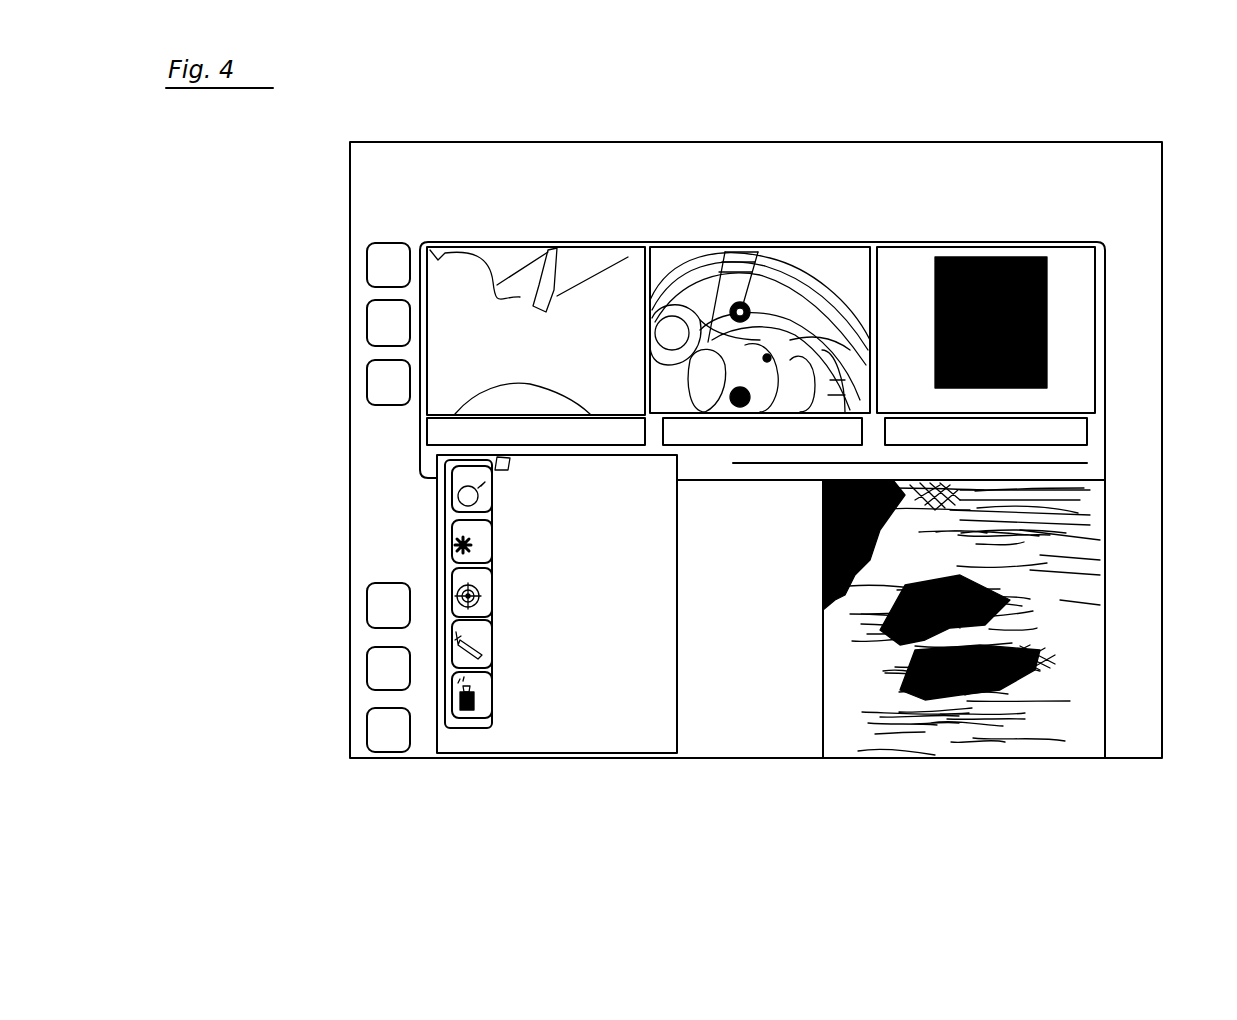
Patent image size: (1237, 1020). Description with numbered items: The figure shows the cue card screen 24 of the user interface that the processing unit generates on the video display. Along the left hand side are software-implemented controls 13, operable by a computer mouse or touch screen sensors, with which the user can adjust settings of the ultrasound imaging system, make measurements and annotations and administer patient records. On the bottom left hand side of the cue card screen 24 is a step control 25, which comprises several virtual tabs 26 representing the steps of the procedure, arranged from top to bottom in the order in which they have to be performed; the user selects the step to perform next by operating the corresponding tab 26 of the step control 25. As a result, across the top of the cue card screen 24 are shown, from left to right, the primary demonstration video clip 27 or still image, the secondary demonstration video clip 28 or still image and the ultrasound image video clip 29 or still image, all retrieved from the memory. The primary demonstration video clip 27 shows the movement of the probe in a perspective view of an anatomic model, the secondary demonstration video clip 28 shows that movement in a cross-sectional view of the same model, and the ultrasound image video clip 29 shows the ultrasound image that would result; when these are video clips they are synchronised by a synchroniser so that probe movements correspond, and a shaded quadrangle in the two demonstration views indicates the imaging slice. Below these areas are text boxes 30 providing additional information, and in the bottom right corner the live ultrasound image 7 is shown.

The cue card screen 24 is at (631, 162).
The controls 13 is at (385, 262).
The primary demonstration video clip 27 is at (508, 258).
The secondary demonstration video clip 28 is at (807, 263).
The ultrasound image video clip 29 is at (993, 253).
The text boxes 30 is at (445, 428).
The step control 25 is at (607, 735).
The virtual tabs 26 is at (492, 498).
The live ultrasound image 7 is at (1015, 727).